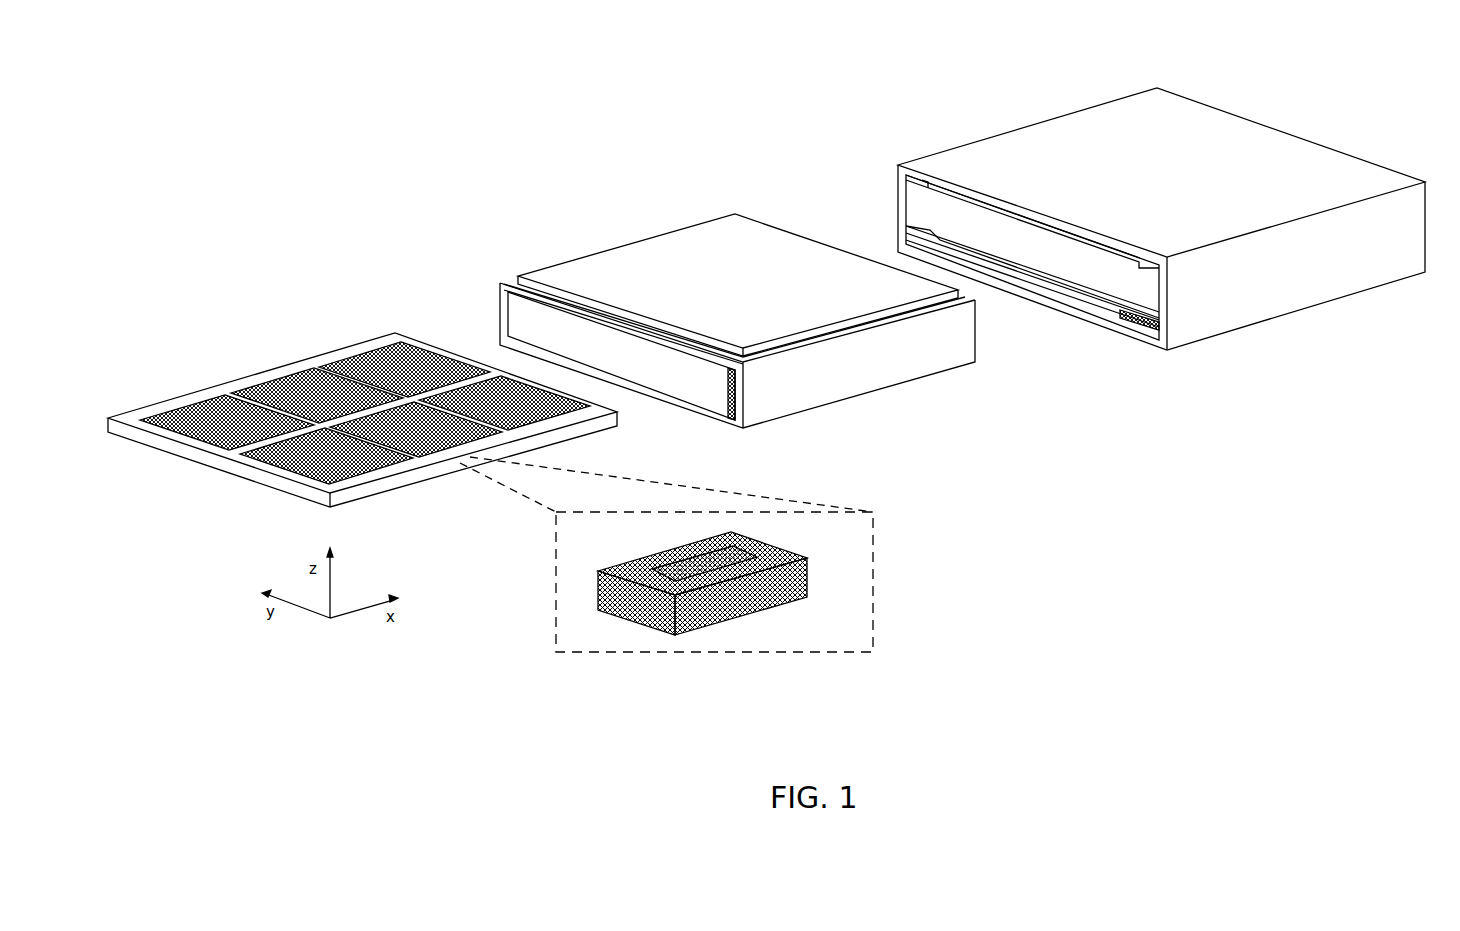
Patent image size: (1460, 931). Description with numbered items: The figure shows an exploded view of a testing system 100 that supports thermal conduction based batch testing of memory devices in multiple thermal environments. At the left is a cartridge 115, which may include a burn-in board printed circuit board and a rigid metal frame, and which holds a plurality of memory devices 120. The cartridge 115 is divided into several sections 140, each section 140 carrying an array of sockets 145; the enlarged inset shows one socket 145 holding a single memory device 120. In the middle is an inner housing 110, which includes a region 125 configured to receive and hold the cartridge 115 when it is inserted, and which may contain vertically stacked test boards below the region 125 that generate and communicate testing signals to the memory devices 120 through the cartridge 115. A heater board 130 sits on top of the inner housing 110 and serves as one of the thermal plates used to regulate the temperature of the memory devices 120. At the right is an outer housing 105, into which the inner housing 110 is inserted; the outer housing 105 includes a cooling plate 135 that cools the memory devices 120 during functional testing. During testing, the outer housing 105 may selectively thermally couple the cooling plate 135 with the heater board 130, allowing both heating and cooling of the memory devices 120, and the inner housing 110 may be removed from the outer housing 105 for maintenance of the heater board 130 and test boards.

The testing system 100 is at (1051, 713).
The outer housing 105 is at (1161, 216).
The inner housing 110 is at (818, 407).
The cartridge 115 is at (223, 475).
The memory device 120 is at (683, 555).
The region 125 is at (518, 280).
The heater board 130 is at (714, 232).
The cooling plate 135 is at (1113, 310).
The section 140 is at (204, 388).
The socket 145 is at (773, 607).